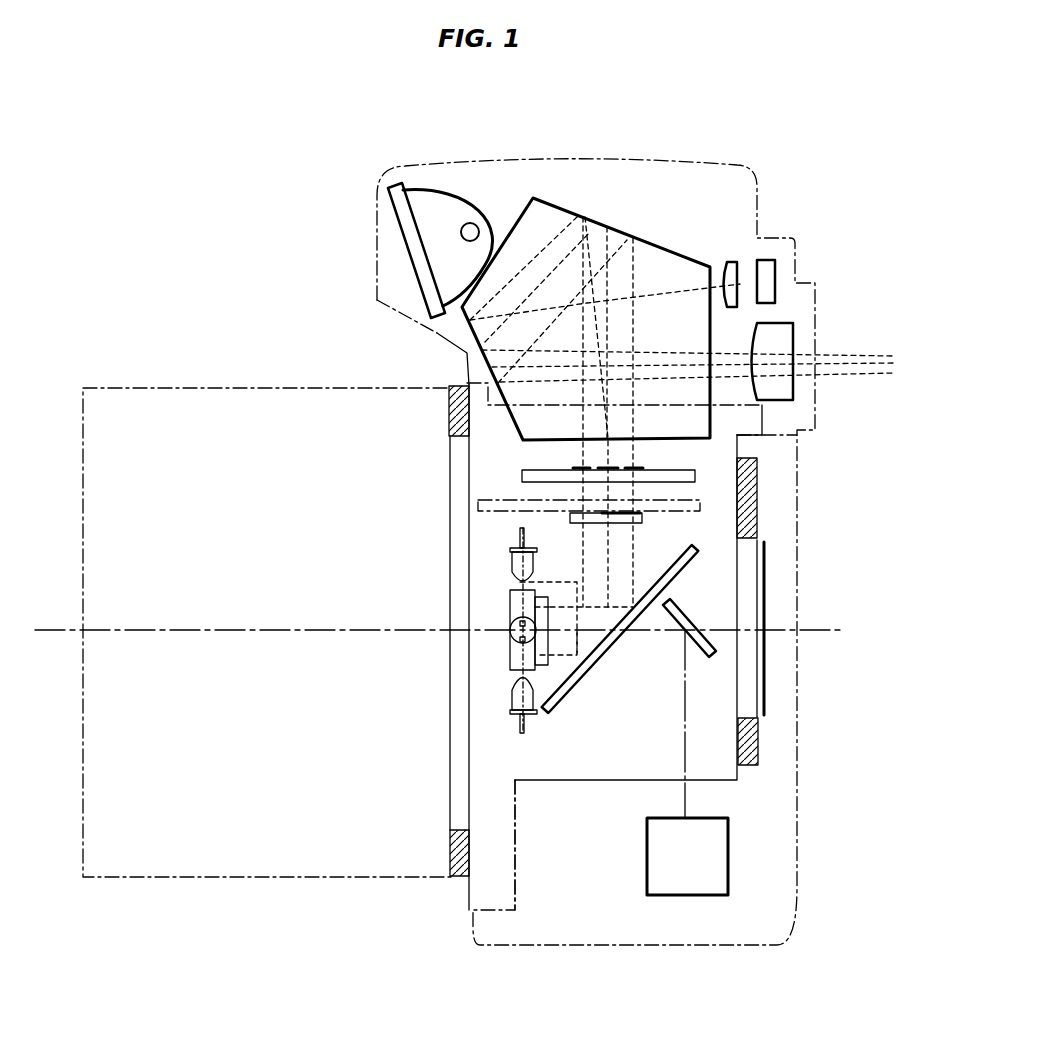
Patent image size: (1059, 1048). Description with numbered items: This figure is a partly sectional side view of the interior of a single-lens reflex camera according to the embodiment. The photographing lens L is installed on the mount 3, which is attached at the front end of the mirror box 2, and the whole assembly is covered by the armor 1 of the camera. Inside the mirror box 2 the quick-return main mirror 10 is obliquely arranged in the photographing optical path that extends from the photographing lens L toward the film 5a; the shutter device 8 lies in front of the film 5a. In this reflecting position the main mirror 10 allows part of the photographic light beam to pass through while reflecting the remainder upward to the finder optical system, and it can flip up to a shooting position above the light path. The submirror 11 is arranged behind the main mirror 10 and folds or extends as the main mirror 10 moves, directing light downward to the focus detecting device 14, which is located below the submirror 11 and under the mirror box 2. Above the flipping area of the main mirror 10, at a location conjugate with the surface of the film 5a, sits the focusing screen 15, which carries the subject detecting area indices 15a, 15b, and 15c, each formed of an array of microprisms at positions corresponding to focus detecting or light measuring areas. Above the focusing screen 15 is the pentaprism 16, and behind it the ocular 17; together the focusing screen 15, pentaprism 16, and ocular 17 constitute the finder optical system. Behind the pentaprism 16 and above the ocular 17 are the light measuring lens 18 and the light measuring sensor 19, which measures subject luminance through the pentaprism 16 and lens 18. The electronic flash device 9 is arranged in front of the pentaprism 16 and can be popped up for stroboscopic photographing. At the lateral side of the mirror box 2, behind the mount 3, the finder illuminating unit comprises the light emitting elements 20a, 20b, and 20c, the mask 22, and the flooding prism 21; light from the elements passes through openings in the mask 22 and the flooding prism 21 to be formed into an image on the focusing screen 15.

The armor 1 is at (605, 160).
The mirror box 2 is at (517, 847).
The mount 3 is at (453, 385).
The film 5a is at (765, 688).
The shutter device 8 is at (757, 475).
The electronic flash device 9 is at (440, 192).
The quick-return main mirror 10 is at (673, 503).
The submirror 11 is at (642, 520).
The focus detecting device 14 is at (710, 852).
The focusing screen 15 is at (524, 478).
The subject detecting area index 15a is at (608, 468).
The subject detecting area index 15b is at (635, 467).
The subject detecting area index 15c is at (583, 468).
The pentaprism 16 is at (643, 240).
The ocular 17 is at (780, 337).
The light measuring lens 18 is at (730, 262).
The light measuring sensor 19 is at (768, 272).
The light emitting element 20a is at (510, 653).
The light emitting element 20b is at (510, 567).
The light emitting element 20c is at (523, 693).
The flooding prism 21 is at (542, 647).
The mask 22 is at (520, 600).
The photographing lens L is at (213, 388).